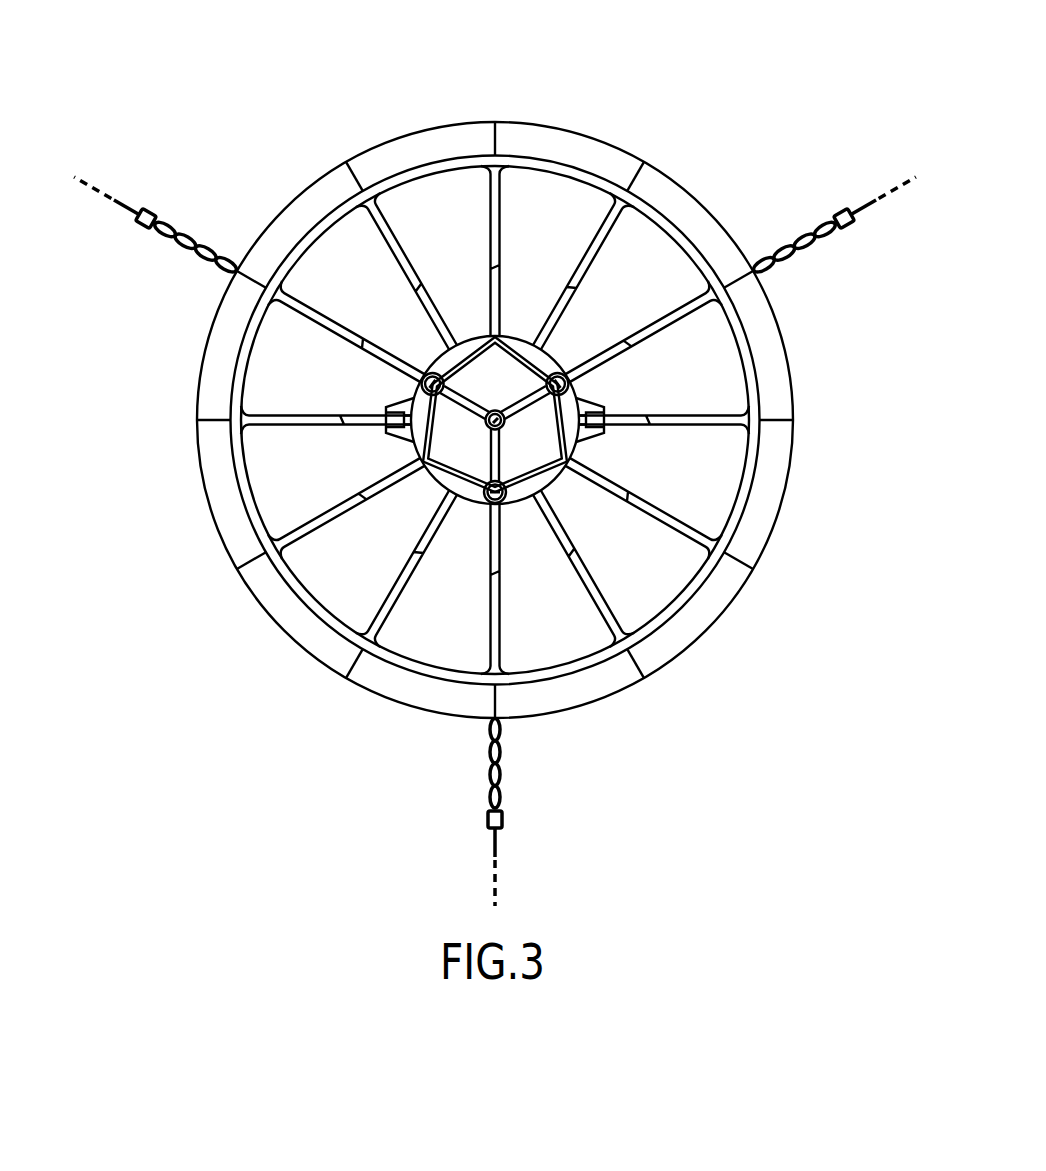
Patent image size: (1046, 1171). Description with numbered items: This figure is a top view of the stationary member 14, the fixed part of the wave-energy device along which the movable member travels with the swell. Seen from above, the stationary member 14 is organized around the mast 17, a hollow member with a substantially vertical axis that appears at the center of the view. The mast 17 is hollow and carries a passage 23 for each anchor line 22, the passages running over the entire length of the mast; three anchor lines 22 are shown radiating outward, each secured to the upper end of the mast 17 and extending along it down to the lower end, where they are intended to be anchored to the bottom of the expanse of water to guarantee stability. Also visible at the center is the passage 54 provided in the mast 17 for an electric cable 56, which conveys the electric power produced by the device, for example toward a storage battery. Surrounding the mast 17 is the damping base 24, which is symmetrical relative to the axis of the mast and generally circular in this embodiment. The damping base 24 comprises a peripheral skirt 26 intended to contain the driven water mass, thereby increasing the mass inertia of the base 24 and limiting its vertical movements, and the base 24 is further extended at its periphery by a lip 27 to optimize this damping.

The stationary member 14 is at (315, 88).
The mast 17 is at (510, 335).
The anchor line 22 is at (176, 230).
The passage 23 is at (427, 372).
The damping base 24 is at (636, 260).
The peripheral skirt 26 is at (680, 240).
The lip 27 is at (778, 373).
The passage 54 is at (505, 428).
The electric cable 56 is at (497, 410).